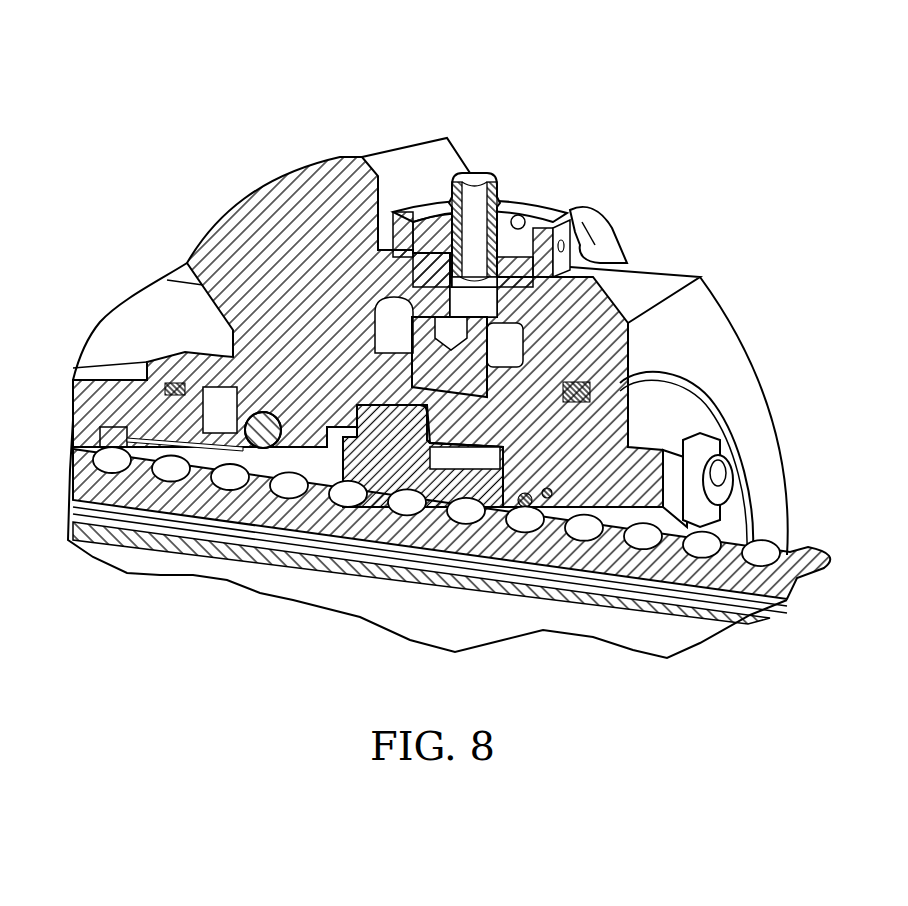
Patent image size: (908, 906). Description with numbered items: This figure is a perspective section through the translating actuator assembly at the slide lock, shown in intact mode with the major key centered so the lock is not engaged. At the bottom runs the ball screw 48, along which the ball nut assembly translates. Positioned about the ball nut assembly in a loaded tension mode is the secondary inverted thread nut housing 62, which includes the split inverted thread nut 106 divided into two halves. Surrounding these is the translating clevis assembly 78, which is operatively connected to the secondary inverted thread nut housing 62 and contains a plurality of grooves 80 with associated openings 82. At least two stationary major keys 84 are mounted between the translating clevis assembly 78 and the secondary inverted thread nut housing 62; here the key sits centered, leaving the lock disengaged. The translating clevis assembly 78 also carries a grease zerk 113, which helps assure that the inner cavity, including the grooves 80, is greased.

The translating clevis assembly 78 is at (385, 172).
The stationary major key 84 is at (410, 337).
The groove 80 is at (610, 307).
The opening 82 is at (505, 330).
The grease zerk 113 is at (474, 172).
The secondary inverted thread nut housing 62 is at (620, 420).
The split inverted thread nut 106 is at (380, 470).
The ball screw 48 is at (793, 547).